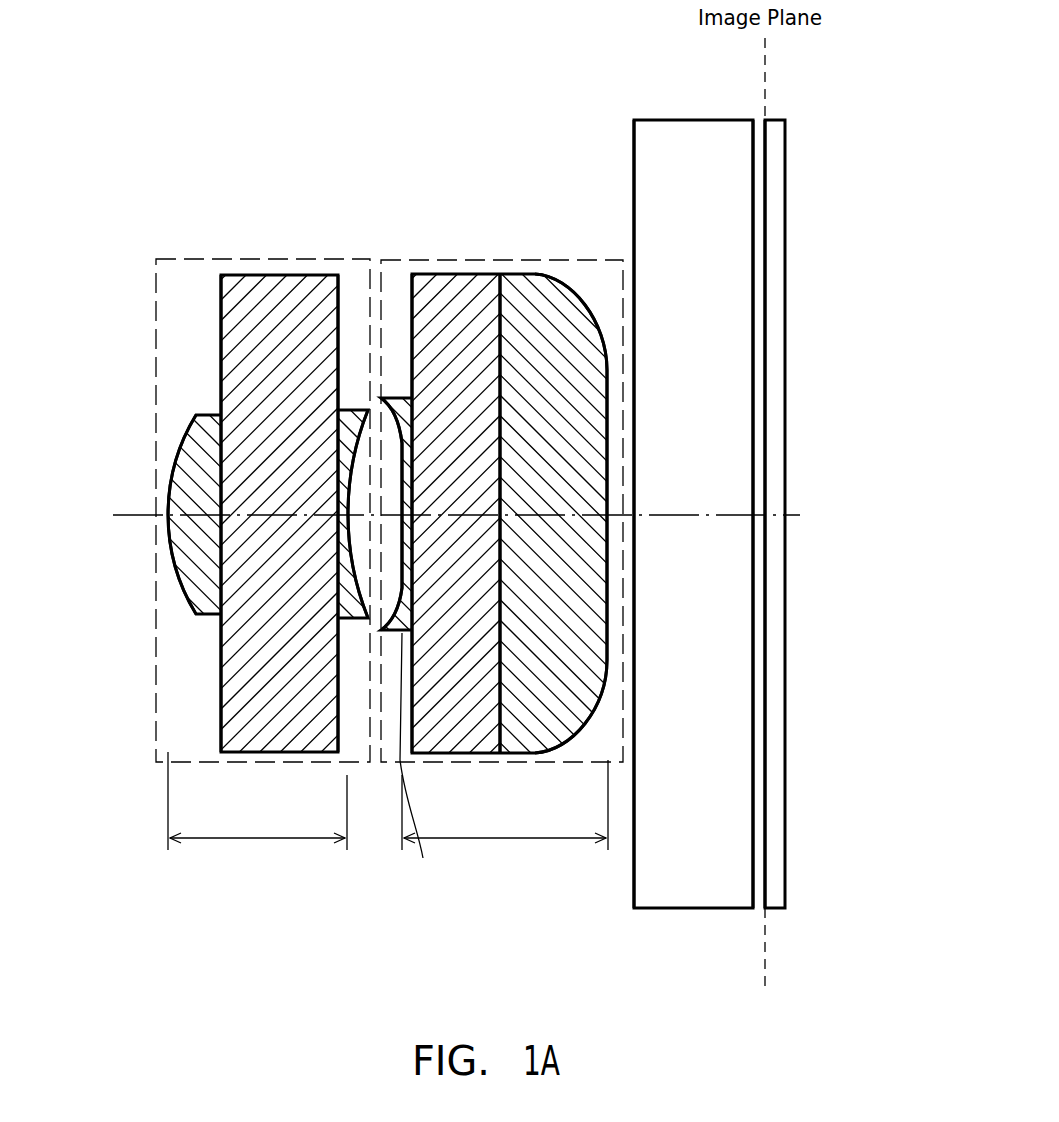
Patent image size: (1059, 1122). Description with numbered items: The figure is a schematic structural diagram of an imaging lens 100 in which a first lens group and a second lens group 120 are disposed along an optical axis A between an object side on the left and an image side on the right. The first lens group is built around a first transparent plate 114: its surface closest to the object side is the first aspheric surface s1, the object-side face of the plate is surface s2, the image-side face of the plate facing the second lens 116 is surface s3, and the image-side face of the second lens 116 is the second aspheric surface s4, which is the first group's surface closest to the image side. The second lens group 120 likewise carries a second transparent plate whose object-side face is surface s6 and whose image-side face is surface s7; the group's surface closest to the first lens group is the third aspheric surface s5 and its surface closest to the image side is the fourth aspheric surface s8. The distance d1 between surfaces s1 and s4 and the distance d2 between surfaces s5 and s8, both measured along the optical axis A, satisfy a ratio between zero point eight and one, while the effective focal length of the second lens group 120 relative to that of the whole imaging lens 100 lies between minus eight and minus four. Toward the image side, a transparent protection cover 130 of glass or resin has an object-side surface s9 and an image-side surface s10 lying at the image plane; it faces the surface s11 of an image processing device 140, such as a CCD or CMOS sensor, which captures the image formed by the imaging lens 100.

The imaging lens 100 is at (850, 1002).
The optical axis A is at (128, 512).
The first transparent plate 114 is at (283, 300).
The second lens 116 is at (357, 412).
The second lens group 120 is at (562, 260).
The protection cover 130 is at (687, 587).
The image processing device 140 is at (777, 793).
The first aspheric surface s1 is at (187, 596).
The surface of the first transparent plate facing the first lens s2 is at (218, 690).
The surface of the first transparent plate facing the second lens s3 is at (333, 618).
The second aspheric surface s4 is at (356, 567).
The third aspheric surface s5 is at (397, 573).
The surface of the second transparent plate facing the third lens s6 is at (415, 707).
The surface of the second transparent plate facing the fourth lens s7 is at (503, 700).
The fourth aspheric surface s8 is at (575, 733).
The surface of the protection cover facing the object side s9 is at (630, 868).
The surface of the protection cover facing the image processing device s10 is at (753, 157).
The surface of the image processing device s11 is at (767, 340).
The distance between the first aspheric surface and the second aspheric surface d1 is at (257, 801).
The distance between the third aspheric surface and the fourth aspheric surface d2 is at (505, 805).